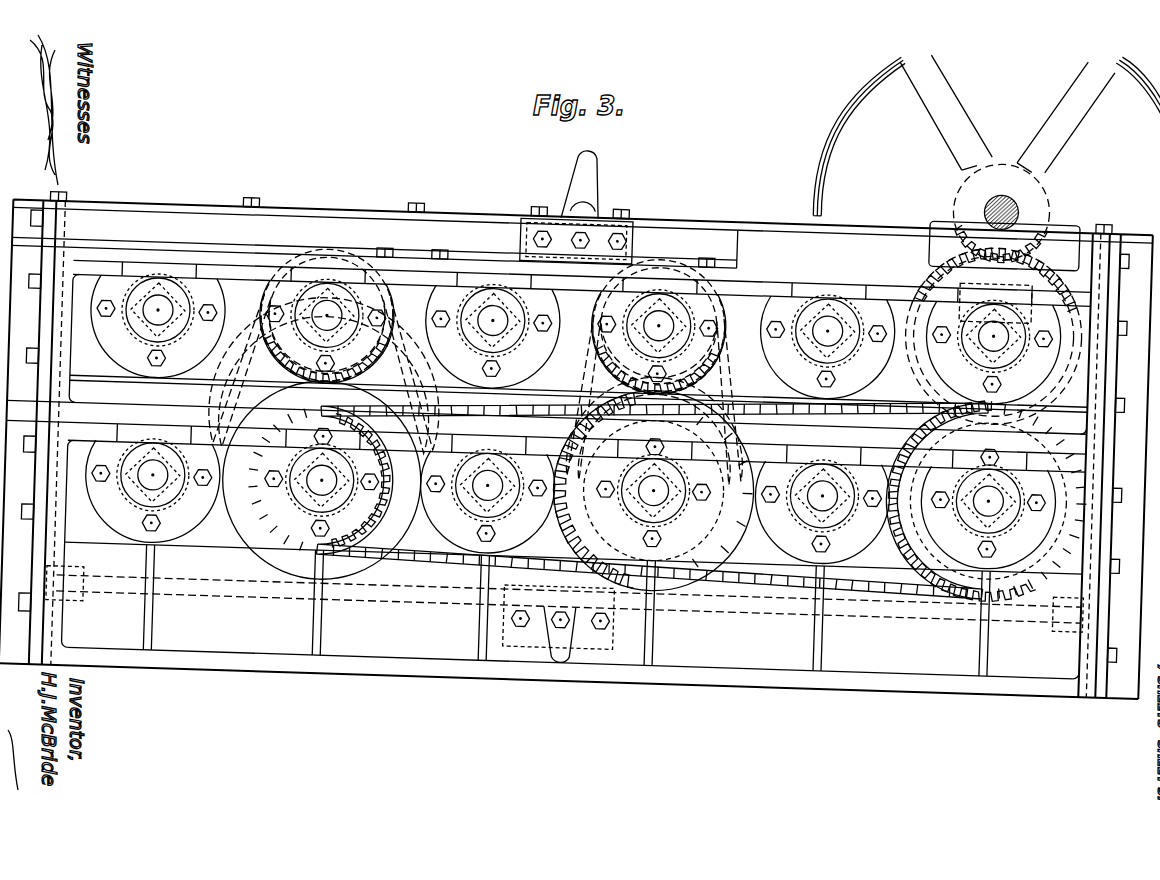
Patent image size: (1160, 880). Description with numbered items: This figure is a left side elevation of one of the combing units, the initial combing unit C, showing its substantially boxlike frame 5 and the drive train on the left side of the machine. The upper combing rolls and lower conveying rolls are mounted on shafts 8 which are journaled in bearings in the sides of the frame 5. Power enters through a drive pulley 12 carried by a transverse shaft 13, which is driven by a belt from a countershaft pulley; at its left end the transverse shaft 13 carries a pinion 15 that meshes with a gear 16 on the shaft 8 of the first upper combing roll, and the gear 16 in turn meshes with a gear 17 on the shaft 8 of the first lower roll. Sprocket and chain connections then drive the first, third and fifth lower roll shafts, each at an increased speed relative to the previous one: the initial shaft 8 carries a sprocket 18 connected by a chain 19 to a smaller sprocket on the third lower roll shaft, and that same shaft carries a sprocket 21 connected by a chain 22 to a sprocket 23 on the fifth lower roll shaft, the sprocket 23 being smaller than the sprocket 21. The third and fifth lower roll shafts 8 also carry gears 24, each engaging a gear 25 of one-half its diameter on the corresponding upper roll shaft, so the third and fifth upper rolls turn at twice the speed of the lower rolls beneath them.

The combing unit C is at (577, 433).
The frame 5 is at (570, 162).
The shaft 8 is at (154, 314).
The drive pulley 12 is at (817, 123).
The transverse shaft 13 is at (982, 177).
The pinion 15 is at (1032, 168).
The gear 16 is at (1038, 236).
The gear 17 is at (1040, 357).
The sprocket 18 is at (1003, 535).
The chain 19 is at (863, 563).
The sprocket 21 is at (565, 544).
The chain 22 is at (430, 548).
The sprocket 23 is at (344, 493).
The gear 24 is at (325, 375).
The gear 25 is at (305, 347).